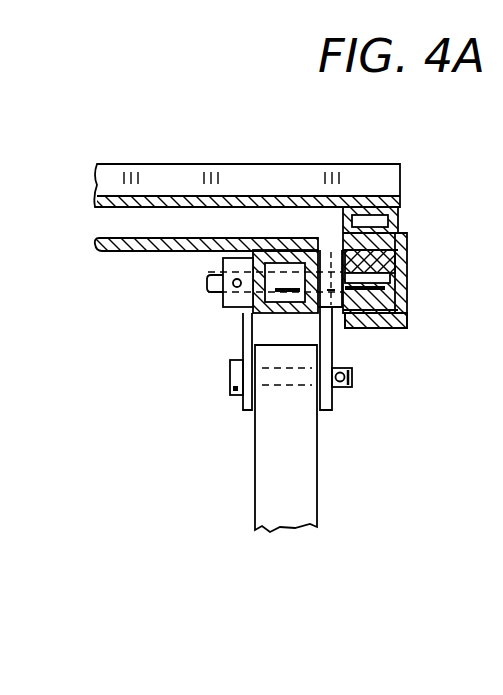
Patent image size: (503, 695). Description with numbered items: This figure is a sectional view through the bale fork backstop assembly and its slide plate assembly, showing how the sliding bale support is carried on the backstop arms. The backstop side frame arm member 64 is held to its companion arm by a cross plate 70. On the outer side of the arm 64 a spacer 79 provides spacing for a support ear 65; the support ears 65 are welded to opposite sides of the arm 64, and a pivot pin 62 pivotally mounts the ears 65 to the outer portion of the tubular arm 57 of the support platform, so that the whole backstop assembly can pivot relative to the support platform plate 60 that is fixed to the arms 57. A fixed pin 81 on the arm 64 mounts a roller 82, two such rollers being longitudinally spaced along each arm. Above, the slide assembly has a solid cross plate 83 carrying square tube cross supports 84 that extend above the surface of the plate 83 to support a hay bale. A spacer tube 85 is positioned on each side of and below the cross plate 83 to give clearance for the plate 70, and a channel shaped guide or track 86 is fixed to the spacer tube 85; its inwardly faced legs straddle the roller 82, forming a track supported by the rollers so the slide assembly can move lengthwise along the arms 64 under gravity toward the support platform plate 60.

The tubular arm 57 is at (303, 481).
The support platform plate 60 is at (263, 240).
The pivot pin 62 is at (352, 384).
The backstop side frame arm member 64 is at (268, 317).
The support ear 65 is at (245, 411).
The cross plate 70 is at (140, 251).
The spacer 79 is at (337, 312).
The fixed pin 81 is at (385, 283).
The roller 82 is at (405, 252).
The cross plate 83 is at (100, 206).
The square tube cross support 84 is at (387, 180).
The spacer tube 85 is at (396, 213).
The channel shaped guide or track 86 is at (400, 319).